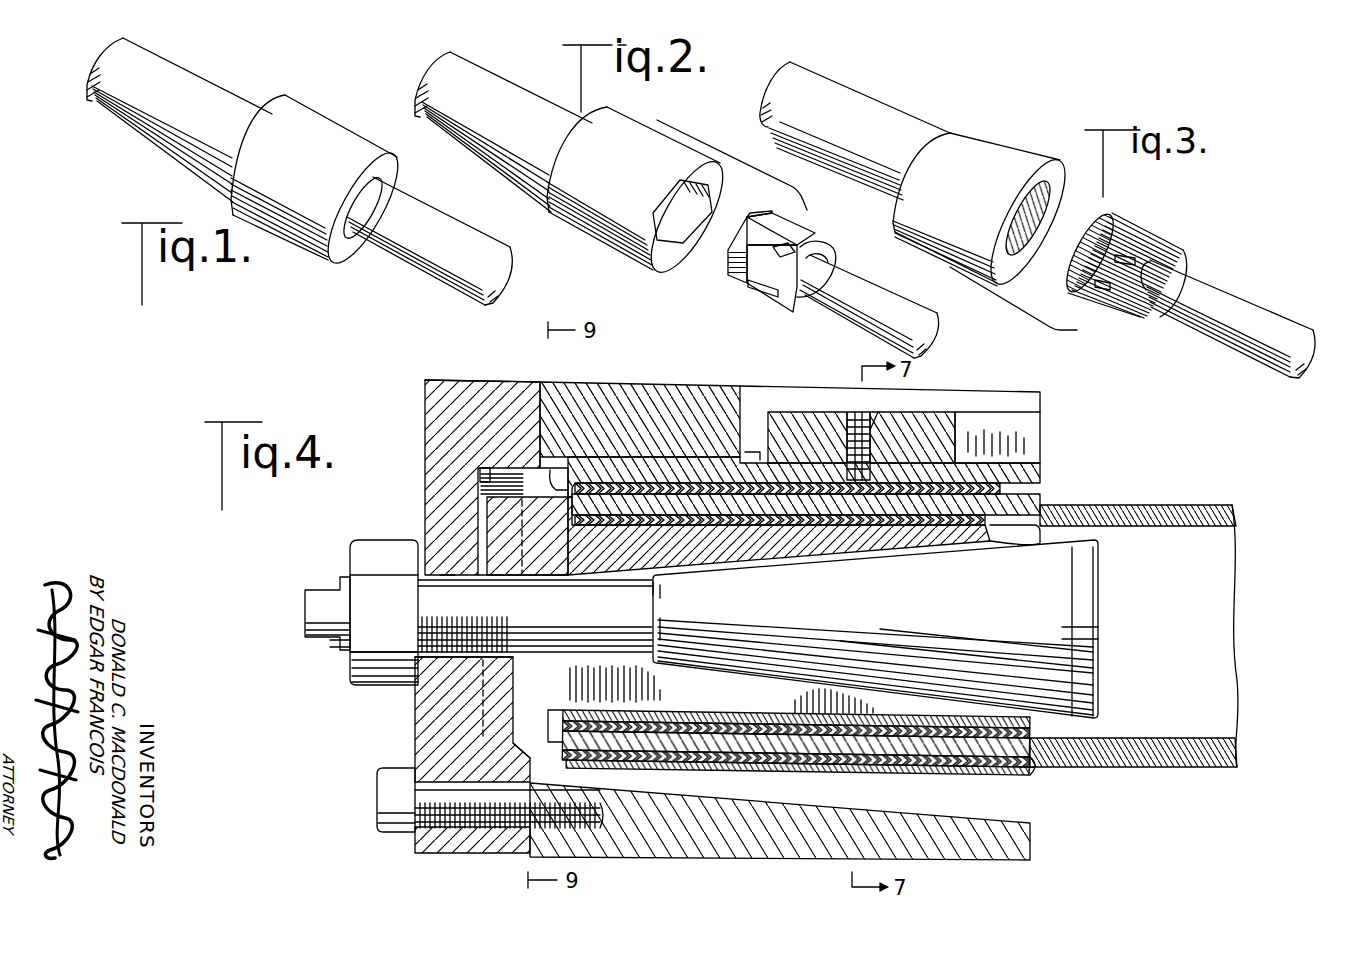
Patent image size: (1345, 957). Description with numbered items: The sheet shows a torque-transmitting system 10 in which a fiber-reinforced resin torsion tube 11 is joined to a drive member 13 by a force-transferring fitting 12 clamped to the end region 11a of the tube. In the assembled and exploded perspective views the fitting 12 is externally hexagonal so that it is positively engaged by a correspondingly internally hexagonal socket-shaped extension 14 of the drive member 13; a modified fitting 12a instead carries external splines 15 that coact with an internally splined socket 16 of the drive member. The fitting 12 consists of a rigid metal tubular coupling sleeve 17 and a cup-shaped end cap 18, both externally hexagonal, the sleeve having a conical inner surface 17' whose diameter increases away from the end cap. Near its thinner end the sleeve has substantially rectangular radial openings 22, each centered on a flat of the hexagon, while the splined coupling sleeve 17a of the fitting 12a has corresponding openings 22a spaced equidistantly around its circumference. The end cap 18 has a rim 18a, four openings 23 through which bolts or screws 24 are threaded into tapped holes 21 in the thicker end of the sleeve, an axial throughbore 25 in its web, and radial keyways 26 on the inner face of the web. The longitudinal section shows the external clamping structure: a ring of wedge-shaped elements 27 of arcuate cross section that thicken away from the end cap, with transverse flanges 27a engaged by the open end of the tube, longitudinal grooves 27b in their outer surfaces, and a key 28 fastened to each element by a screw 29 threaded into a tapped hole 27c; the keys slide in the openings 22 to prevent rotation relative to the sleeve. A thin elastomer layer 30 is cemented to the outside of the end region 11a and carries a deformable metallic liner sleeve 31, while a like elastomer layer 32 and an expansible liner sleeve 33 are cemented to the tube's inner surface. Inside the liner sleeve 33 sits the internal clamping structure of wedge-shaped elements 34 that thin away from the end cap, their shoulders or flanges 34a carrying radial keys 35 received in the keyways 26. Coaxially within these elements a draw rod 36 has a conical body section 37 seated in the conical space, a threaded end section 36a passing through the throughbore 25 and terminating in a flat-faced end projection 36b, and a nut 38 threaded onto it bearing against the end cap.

In FIG. 1, the torque-transmitting system 10 is at (350, 100).
In FIG. 1, the torsion tube 11 is at (447, 223).
In FIG. 2, the torsion tube 11 is at (878, 297).
In FIG. 3, the torsion tube 11 is at (1268, 312).
In FIG. 4, the torsion tube 11 is at (1158, 510).
In FIG. 4, the end region of the torsion tube 11a is at (744, 532).
In FIG. 2, the fitting 12 is at (810, 224).
In FIG. 3, the fitting 12a is at (1148, 228).
In FIG. 2, the drive member 13 is at (517, 95).
In FIG. 3, the drive member 13 is at (890, 118).
In FIG. 2, the socket-shaped extension 14 is at (602, 230).
In FIG. 3, the external splines 15 is at (1123, 216).
In FIG. 3, the internally splined socket 16 is at (1008, 150).
In FIG. 1, the coupling sleeve 17 is at (321, 196).
In FIG. 2, the coupling sleeve 17 is at (771, 269).
In FIG. 4, the coupling sleeve 17 is at (640, 401).
In FIG. 4, the conical inner surface 17' is at (581, 454).
In FIG. 3, the splined coupling sleeve 17a is at (1150, 320).
In FIG. 2, the end cap 18 is at (760, 215).
In FIG. 4, the end cap 18 is at (428, 506).
In FIG. 4, the rim of the end cap 18a is at (509, 384).
In FIG. 4, the tapped holes 21 is at (585, 821).
In FIG. 2, the radial openings 22 is at (792, 253).
In FIG. 4, the radial openings 22 is at (983, 437).
In FIG. 3, the openings 22a is at (1140, 260).
In FIG. 4, the openings 23 is at (437, 830).
In FIG. 4, the bolts or screws 24 is at (387, 787).
In FIG. 4, the axial throughbore 25 is at (457, 573).
In FIG. 4, the radial keyways 26 is at (493, 470).
In FIG. 4, the wedge-shaped elements 27 is at (1042, 469).
In FIG. 4, the transverse flanges 27a is at (551, 740).
In FIG. 4, the longitudinal grooves or keyways 27b is at (1040, 446).
In FIG. 4, the tapped hole 27c is at (901, 432).
In FIG. 4, the key 28 is at (951, 421).
In FIG. 4, the screw 29 is at (846, 444).
In FIG. 4, the elastomer layer 30 is at (1020, 504).
In FIG. 4, the liner sleeve 31 is at (1033, 771).
In FIG. 4, the elastomer layer 32 is at (998, 740).
In FIG. 4, the liner sleeve 33 is at (1005, 535).
In FIG. 4, the wedge-shaped elements 34 is at (825, 549).
In FIG. 4, the shoulders or flanges 34a is at (540, 572).
In FIG. 4, the radial keys 35 is at (502, 495).
In FIG. 4, the draw rod 36 is at (621, 597).
In FIG. 4, the threaded end section 36a is at (468, 648).
In FIG. 4, the flat-faced end projection 36b is at (318, 597).
In FIG. 4, the conical body section 37 is at (1063, 634).
In FIG. 4, the nut 38 is at (369, 547).